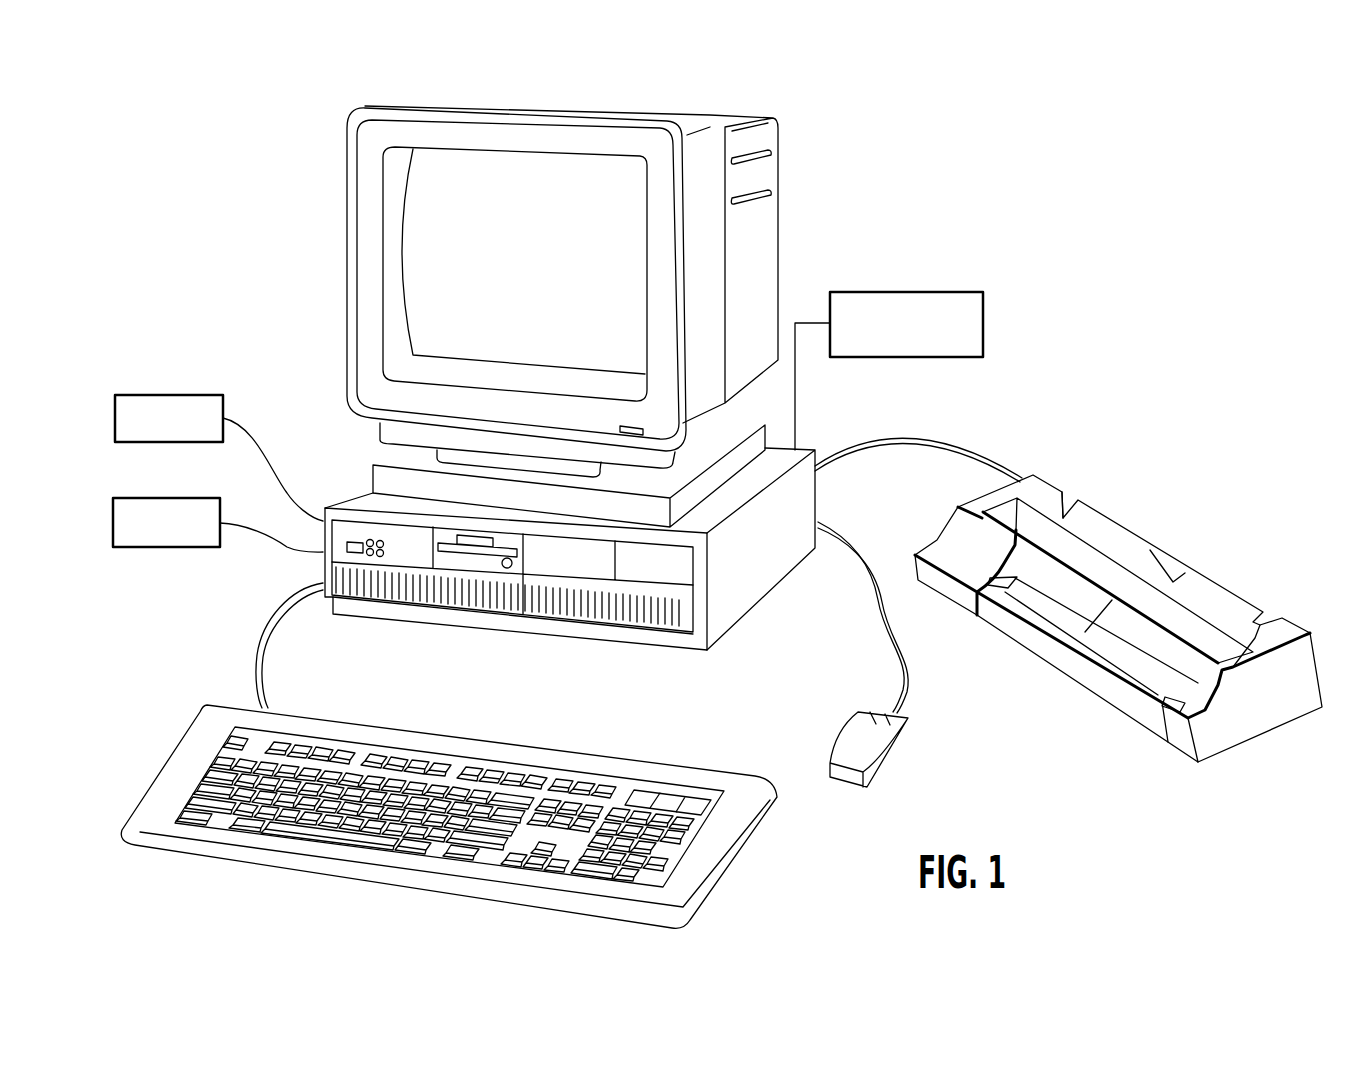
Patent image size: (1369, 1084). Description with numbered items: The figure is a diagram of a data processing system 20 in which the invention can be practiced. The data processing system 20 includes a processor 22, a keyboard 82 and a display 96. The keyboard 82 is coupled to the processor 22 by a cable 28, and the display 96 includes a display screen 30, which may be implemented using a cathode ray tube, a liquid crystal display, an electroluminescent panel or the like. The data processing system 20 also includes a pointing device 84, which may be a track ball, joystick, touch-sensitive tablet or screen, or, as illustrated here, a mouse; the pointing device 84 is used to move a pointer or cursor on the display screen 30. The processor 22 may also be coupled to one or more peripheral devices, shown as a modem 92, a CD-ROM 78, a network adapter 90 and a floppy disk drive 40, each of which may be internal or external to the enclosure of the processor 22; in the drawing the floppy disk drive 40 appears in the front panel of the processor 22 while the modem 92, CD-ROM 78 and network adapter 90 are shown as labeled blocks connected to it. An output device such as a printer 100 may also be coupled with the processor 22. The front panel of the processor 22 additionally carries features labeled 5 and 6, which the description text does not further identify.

The data processing system 20 is at (1127, 252).
The processor 22 is at (706, 673).
The hard disk drive bay 5 is at (625, 587).
The drive bay 6 is at (602, 608).
The cable 28 is at (257, 632).
The display screen 30 is at (526, 298).
The floppy disk drive 40 is at (477, 552).
The CD-ROM 78 is at (143, 548).
The keyboard 82 is at (378, 898).
The pointing device 84 is at (903, 747).
The network adapter 90 is at (908, 290).
The modem 92 is at (163, 393).
The display 96 is at (320, 238).
The printer 100 is at (1158, 520).